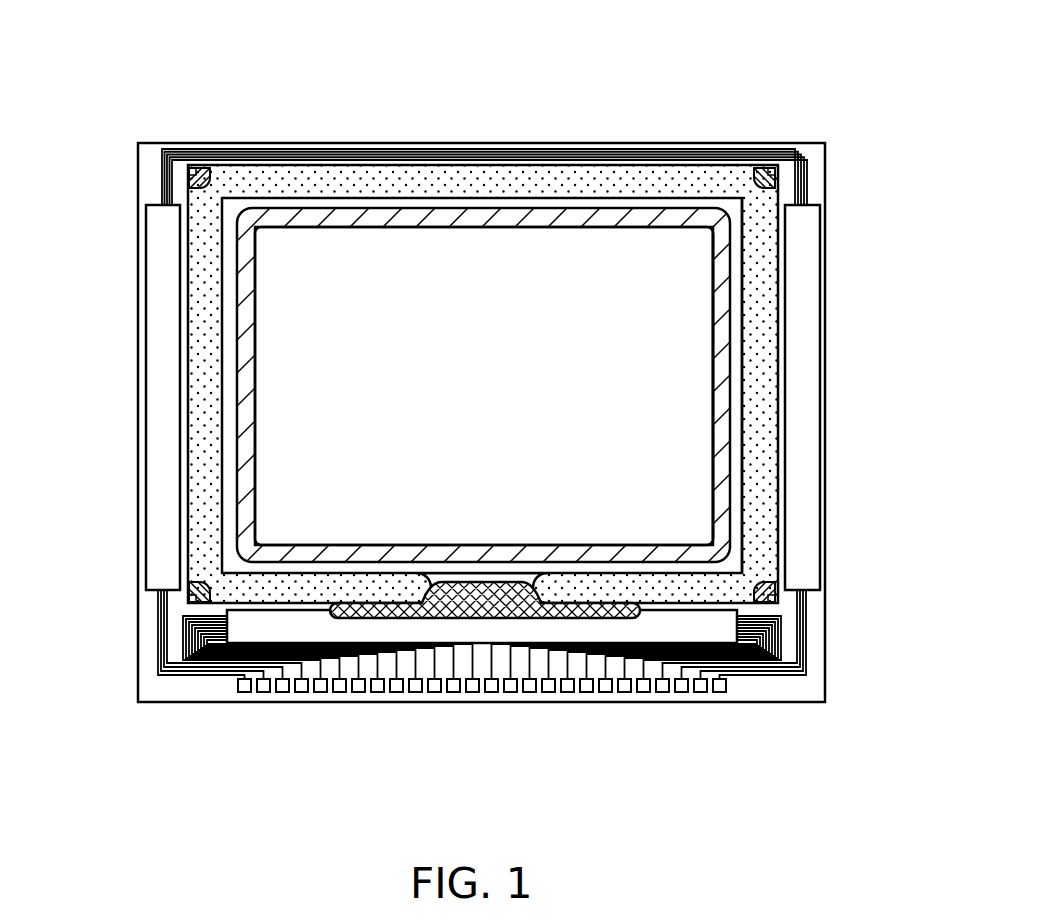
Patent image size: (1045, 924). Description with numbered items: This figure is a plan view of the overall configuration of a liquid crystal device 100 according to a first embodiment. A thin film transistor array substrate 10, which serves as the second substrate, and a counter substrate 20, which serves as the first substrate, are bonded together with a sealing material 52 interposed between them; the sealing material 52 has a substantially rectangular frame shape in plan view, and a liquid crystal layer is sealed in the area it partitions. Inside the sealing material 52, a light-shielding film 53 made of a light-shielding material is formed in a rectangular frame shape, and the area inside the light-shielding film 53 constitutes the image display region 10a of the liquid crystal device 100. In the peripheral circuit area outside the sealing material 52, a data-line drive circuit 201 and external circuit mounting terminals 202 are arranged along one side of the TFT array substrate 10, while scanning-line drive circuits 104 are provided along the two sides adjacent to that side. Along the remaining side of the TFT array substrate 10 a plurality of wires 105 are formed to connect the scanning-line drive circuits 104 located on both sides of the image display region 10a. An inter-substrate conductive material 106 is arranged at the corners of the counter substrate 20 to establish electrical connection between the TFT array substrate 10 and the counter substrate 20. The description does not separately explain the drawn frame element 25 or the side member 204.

The liquid crystal device 100 is at (862, 58).
The TFT array substrate 10 is at (444, 148).
The image display region 10a is at (507, 396).
The counter substrate 20 is at (688, 163).
The light-shielding frame 25 is at (568, 205).
The wires 105 is at (340, 152).
The inter-substrate conductive material 106 is at (193, 166).
The scanning-line drive circuits 104 is at (160, 313).
The sealing material 52 is at (758, 300).
The light-shielding film 53 is at (722, 510).
The right side member 204 is at (805, 398).
The data-line drive circuit 201 is at (480, 632).
The external circuit mounting terminals 202 is at (395, 694).